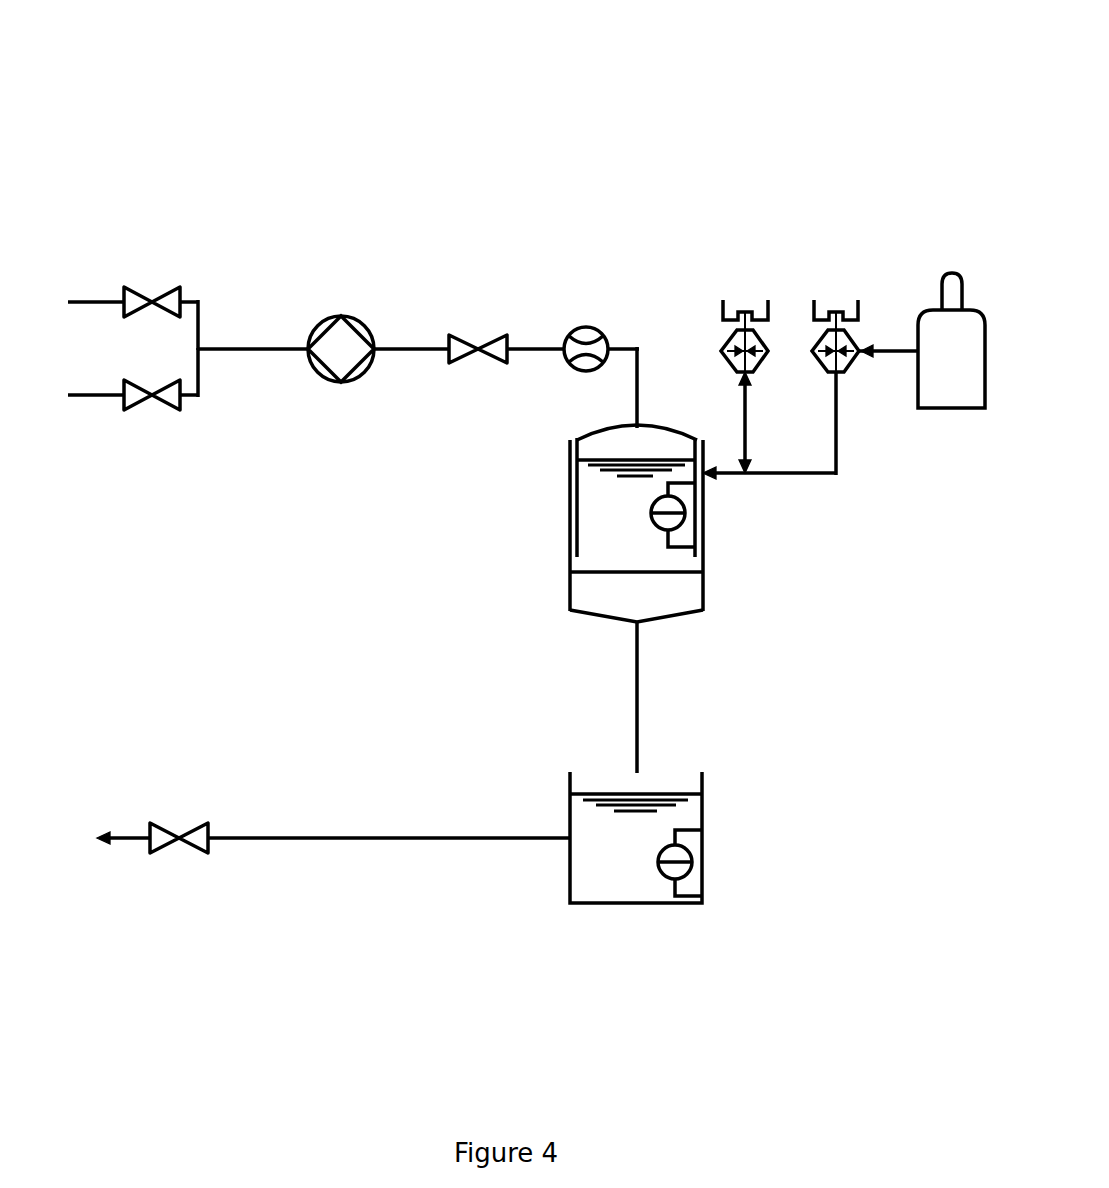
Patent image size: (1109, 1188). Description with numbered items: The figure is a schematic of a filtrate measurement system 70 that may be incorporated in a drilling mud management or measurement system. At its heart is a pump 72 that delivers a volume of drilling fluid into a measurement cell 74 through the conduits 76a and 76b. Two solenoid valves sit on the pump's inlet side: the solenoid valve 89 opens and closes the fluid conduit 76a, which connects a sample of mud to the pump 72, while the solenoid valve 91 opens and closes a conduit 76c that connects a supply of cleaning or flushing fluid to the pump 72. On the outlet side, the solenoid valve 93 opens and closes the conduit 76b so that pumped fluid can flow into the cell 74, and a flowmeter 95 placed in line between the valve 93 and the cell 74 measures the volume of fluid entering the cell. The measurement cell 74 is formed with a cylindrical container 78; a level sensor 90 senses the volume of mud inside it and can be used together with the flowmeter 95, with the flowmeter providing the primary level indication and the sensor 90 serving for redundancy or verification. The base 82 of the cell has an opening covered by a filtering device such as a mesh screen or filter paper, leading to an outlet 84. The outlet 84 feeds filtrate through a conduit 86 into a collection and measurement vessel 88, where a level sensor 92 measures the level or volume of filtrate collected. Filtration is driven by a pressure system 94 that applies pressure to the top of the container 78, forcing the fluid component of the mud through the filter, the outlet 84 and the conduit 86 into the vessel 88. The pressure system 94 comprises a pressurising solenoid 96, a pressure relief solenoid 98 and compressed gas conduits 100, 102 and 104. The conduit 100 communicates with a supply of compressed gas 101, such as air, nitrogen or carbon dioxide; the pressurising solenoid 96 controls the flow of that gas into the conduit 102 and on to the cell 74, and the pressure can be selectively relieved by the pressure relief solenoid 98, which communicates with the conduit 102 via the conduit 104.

The filtrate measurement system 70 is at (302, 671).
The pump 72 is at (340, 315).
The measurement cell 74 is at (500, 573).
The fluid conduit 76a is at (200, 302).
The conduit 76b is at (410, 355).
The conduit 76c is at (198, 400).
The cylindrical container 78 is at (570, 475).
The base 82 is at (570, 597).
The outlet 84 is at (637, 622).
The conduit 86 is at (635, 688).
The collection and measurement vessel 88 is at (568, 878).
The solenoid valve 89 is at (152, 297).
The level sensor 90 is at (685, 515).
The solenoid valve 91 is at (150, 397).
The level sensor 92 is at (692, 862).
The solenoid valve 93 is at (477, 343).
The pressure system 94 is at (893, 461).
The flowmeter 95 is at (585, 325).
The pressurising solenoid 96 is at (820, 307).
The pressure relief solenoid 98 is at (735, 317).
The compressed gas conduit 100 is at (900, 347).
The supply of compressed gas 101 is at (950, 275).
The compressed gas conduit 102 is at (795, 475).
The compressed gas conduit 104 is at (743, 417).